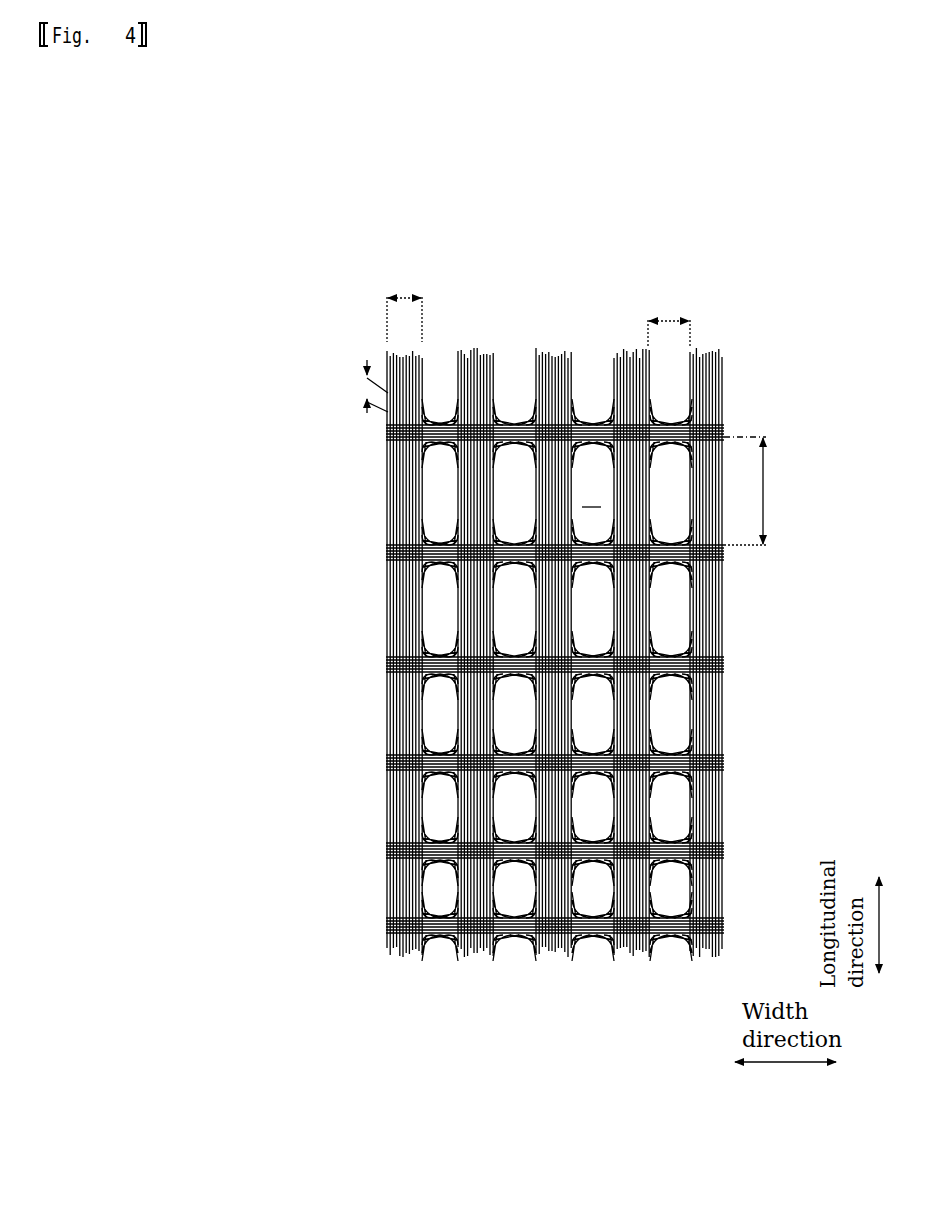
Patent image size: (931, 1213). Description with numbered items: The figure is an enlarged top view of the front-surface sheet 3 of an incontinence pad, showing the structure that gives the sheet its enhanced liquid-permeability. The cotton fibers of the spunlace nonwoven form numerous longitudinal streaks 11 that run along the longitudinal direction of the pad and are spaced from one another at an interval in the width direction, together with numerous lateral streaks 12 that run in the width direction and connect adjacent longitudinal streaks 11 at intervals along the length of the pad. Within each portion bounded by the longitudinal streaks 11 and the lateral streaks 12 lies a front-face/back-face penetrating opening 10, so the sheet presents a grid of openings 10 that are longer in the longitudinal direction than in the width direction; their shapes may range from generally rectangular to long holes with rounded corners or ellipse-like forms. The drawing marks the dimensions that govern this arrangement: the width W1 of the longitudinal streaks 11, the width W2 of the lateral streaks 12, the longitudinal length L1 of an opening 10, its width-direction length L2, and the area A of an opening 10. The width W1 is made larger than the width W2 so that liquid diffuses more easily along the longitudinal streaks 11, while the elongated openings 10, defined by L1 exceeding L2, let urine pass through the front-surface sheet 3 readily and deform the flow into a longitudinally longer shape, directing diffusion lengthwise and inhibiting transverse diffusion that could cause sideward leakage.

The front-surface sheet 3 is at (729, 375).
The openings 10 is at (680, 461).
The longitudinal streaks 11 is at (388, 605).
The lateral streaks 12 is at (513, 424).
The width of the longitudinal streaks W1 is at (404, 300).
The width of the lateral streaks W2 is at (354, 386).
The length of the openings in the longitudinal direction L1 is at (762, 491).
The length of the openings in the width direction L2 is at (669, 314).
The area of the openings A is at (591, 494).